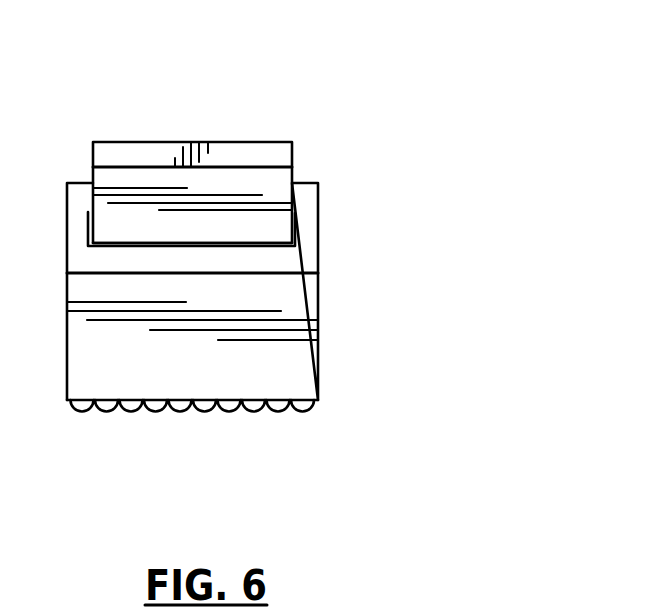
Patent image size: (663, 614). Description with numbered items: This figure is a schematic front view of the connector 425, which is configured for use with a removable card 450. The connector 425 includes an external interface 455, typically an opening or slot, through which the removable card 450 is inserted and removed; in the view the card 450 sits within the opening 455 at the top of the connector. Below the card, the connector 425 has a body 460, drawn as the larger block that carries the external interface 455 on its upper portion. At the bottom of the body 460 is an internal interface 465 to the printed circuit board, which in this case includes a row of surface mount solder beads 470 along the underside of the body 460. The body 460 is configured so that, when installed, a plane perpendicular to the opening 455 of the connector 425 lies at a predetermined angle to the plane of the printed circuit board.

The connector 425 is at (427, 193).
The removable card 450 is at (132, 141).
The external interface 455 is at (295, 213).
The body 460 is at (318, 333).
The internal interface 465 is at (318, 435).
The surface mount solder beads 470 is at (129, 411).